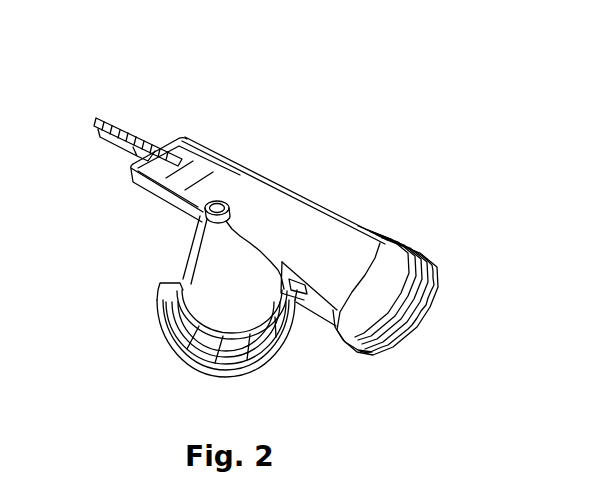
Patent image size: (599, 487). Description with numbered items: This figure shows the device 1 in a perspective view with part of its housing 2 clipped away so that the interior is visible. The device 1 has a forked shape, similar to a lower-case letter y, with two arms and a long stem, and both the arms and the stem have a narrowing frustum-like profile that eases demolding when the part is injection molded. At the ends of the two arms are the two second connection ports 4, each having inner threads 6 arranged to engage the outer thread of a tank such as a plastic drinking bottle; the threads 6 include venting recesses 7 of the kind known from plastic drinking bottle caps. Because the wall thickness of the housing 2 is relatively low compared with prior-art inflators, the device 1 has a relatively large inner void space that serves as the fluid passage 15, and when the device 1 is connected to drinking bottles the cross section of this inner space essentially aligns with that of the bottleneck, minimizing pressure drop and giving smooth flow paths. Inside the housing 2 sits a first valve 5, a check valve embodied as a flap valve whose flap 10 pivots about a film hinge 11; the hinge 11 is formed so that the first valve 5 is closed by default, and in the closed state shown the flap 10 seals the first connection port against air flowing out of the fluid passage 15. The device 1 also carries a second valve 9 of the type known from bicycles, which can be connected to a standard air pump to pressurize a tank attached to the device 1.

The device 1 is at (160, 98).
The housing 2 is at (196, 258).
The second connection port 4 is at (172, 366).
The first valve 5 is at (222, 172).
The inner thread 6 is at (205, 372).
The venting recess 7 is at (262, 372).
The second valve 9 is at (181, 164).
The flap 10 is at (235, 185).
The hinge 11 is at (190, 172).
The fluid passage 15 is at (275, 245).